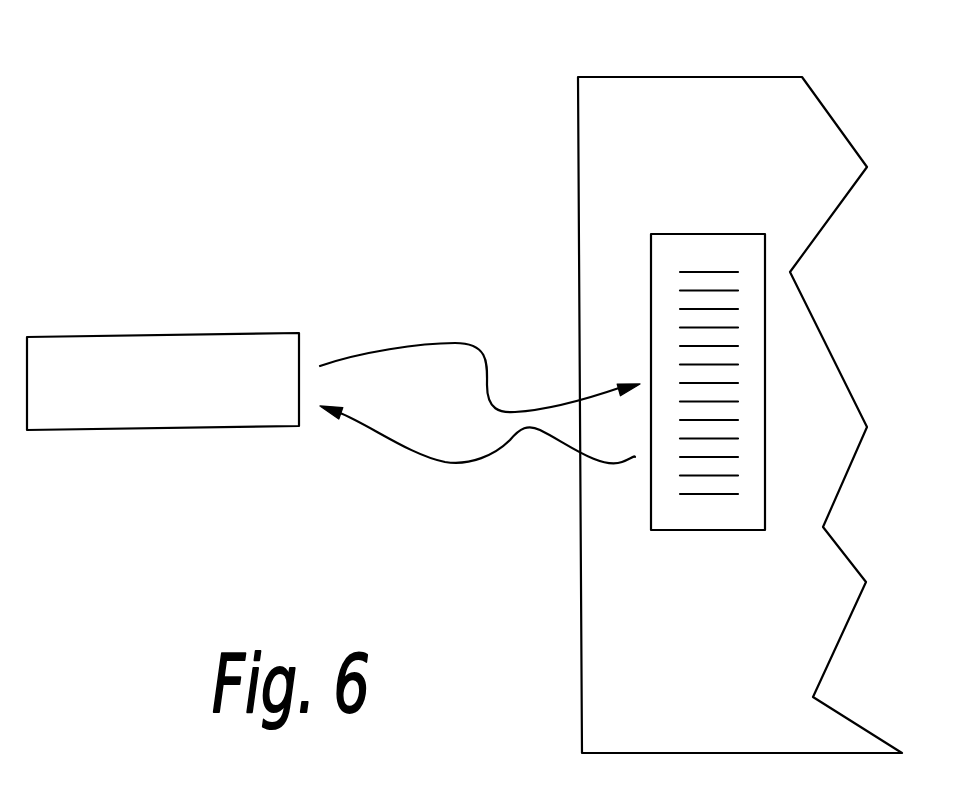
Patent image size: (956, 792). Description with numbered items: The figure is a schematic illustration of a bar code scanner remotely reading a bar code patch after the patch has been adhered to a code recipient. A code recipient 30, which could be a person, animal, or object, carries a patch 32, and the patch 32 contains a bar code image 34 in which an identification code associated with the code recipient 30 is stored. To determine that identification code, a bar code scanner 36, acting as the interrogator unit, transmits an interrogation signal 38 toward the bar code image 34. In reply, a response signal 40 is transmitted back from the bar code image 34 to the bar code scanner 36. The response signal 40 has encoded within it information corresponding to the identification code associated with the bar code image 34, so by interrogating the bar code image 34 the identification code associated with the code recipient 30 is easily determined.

The code recipient 30 is at (658, 75).
The patch 32 is at (725, 233).
The bar code image 34 is at (708, 495).
The bar code scanner 36 is at (147, 335).
The interrogation signal 38 is at (457, 343).
The response signal 40 is at (457, 463).